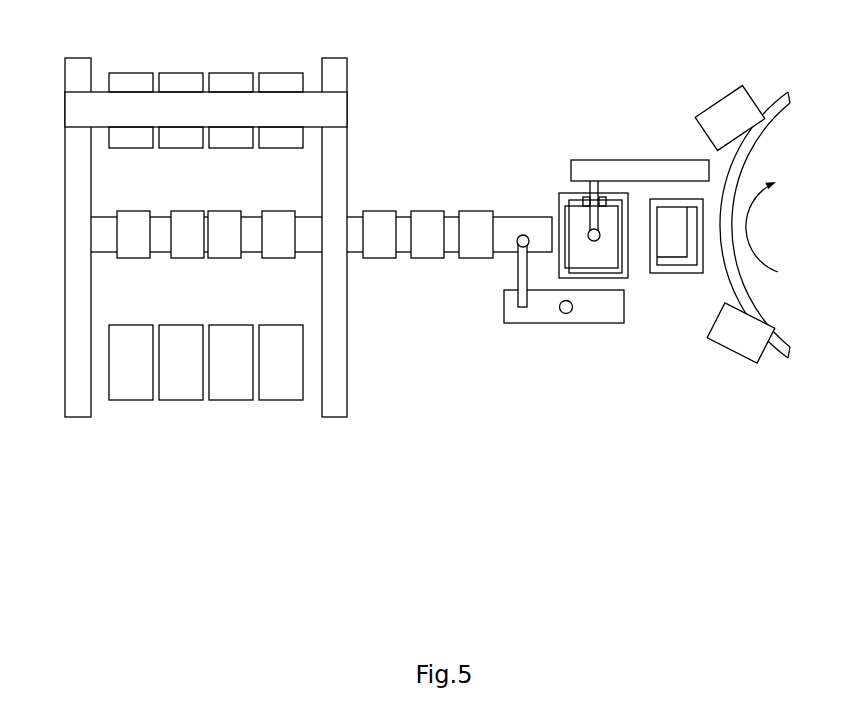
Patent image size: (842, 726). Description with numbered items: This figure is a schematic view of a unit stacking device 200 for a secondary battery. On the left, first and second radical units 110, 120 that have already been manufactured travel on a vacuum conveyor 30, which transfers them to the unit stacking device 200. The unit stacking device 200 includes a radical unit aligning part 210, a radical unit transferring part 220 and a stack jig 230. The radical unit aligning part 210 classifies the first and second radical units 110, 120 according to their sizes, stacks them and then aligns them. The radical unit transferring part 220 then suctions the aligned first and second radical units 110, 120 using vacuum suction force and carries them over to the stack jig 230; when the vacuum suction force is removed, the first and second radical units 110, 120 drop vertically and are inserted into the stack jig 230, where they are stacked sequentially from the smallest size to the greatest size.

The vacuum conveyor 30 is at (357, 225).
The first radical unit 110 is at (398, 271).
The second radical unit 120 is at (379, 258).
The unit stacking device 200 is at (603, 154).
The radical unit aligning part 210 is at (548, 178).
The radical unit transferring part 220 is at (592, 150).
The stack jig 230 is at (670, 194).